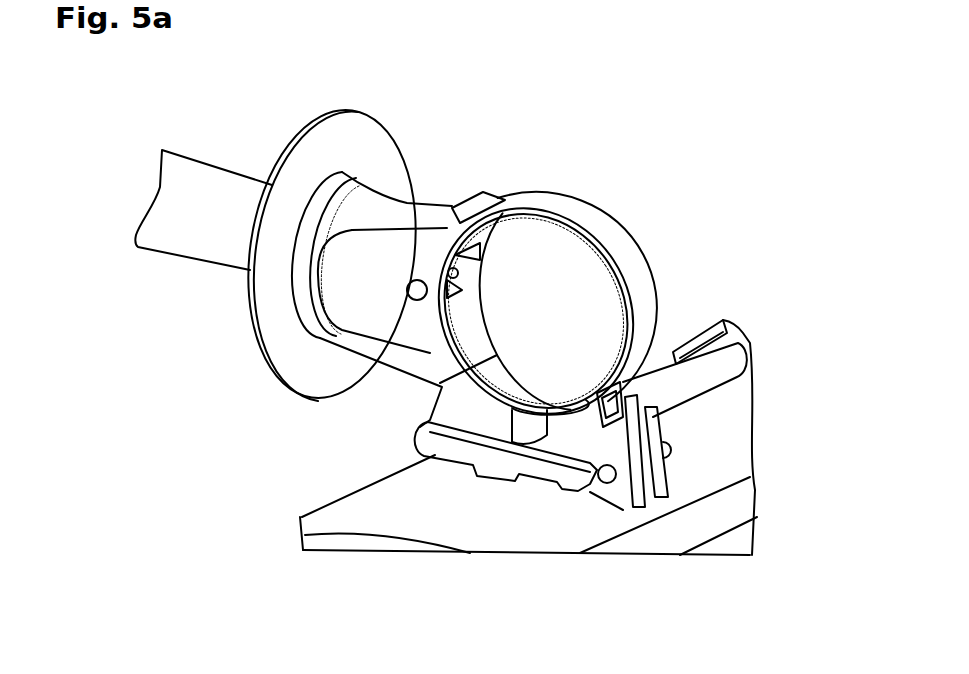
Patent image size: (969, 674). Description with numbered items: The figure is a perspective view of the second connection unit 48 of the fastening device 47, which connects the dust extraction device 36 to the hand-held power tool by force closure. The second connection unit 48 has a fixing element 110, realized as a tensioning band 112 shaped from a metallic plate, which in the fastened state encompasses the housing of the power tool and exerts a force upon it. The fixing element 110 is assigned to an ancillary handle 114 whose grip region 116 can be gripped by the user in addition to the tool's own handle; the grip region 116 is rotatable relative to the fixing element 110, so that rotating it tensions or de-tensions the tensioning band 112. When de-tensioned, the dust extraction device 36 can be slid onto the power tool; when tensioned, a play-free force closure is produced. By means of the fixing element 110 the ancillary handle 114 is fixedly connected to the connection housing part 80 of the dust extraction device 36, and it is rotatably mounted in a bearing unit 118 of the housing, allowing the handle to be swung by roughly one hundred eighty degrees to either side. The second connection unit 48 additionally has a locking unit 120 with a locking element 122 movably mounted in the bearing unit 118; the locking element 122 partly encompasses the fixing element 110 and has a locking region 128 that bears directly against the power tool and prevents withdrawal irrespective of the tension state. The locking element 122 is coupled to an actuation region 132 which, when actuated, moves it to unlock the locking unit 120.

The ancillary handle 114 is at (357, 100).
The grip region 116 is at (170, 190).
The fixing element 110 is at (535, 200).
The tensioning band 112 is at (536, 311).
The fastening device 47 is at (677, 198).
The second connection unit 48 is at (674, 320).
The locking element 122 is at (535, 405).
The locking region 128 is at (557, 393).
The bearing unit 118 is at (677, 428).
The connection housing part 80 is at (742, 492).
The actuation region 132 is at (415, 430).
The locking unit 120 is at (438, 465).
The dust extraction device 36 is at (292, 525).